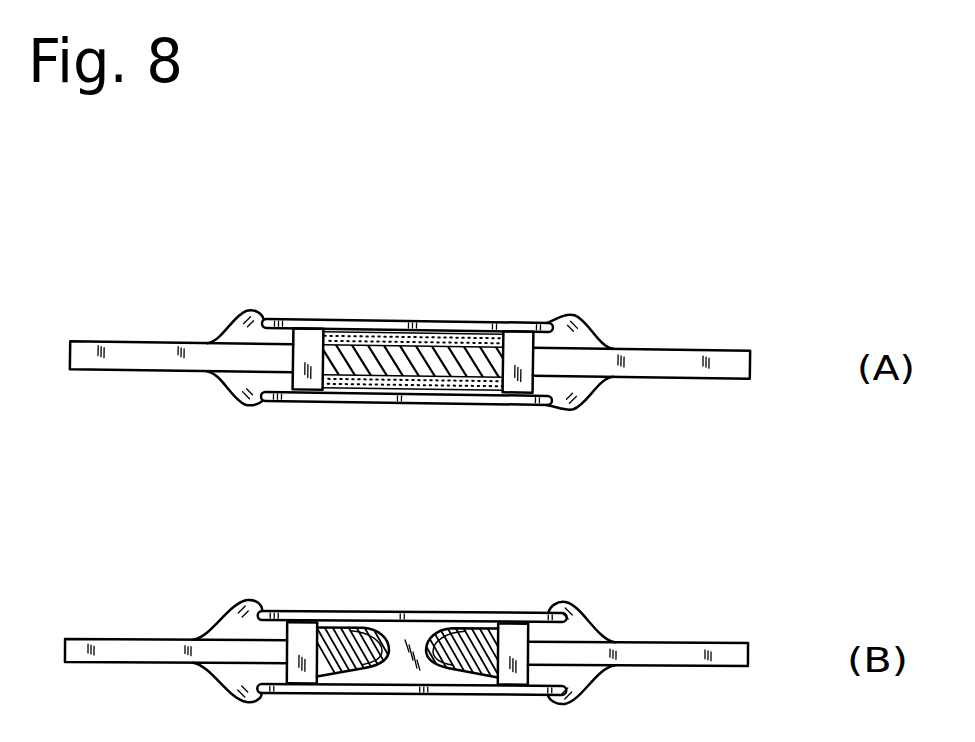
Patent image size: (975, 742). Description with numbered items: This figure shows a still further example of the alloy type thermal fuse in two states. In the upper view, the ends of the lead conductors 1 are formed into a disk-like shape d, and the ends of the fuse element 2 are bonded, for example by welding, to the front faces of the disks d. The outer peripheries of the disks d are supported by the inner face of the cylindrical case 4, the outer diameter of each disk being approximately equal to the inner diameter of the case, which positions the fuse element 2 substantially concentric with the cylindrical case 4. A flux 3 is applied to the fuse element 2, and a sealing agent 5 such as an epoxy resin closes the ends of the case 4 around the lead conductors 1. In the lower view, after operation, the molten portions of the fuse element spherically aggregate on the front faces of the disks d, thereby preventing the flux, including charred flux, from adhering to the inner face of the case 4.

The lead conductor 1 is at (100, 355).
The fuse element 2 is at (373, 353).
The flux 3 is at (445, 350).
The cylindrical case 4 is at (407, 322).
The sealing agent 5 is at (242, 328).
The disk d is at (310, 353).